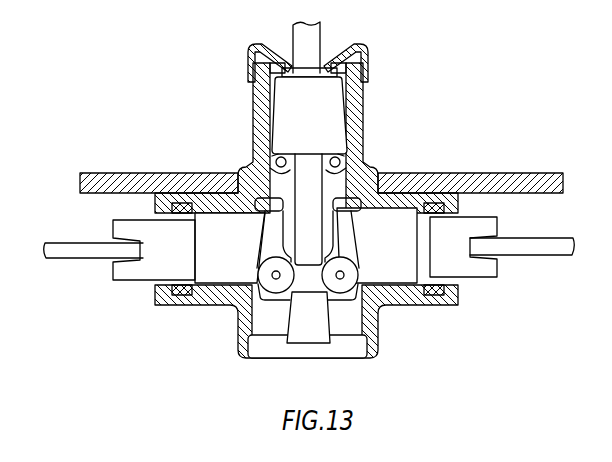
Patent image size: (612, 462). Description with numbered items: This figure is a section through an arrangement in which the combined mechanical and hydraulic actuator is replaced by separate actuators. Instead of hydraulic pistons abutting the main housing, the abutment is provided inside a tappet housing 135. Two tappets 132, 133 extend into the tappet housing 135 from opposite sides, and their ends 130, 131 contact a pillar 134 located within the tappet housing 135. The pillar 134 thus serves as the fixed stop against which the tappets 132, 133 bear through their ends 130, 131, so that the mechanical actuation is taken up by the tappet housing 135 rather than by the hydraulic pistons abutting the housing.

The end of tappet 130 is at (252, 164).
The end of tappet 131 is at (356, 163).
The tappet 132 is at (241, 247).
The tappet 133 is at (411, 274).
The pillar 134 is at (333, 235).
The tappet housing 135 is at (353, 110).